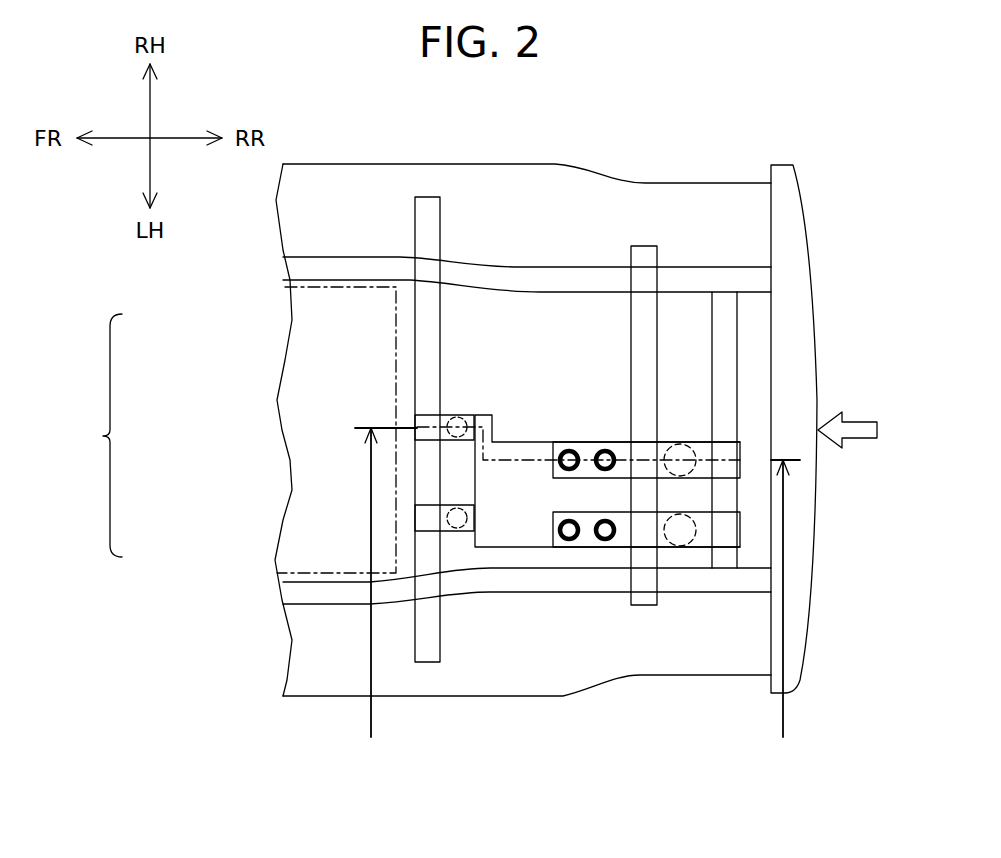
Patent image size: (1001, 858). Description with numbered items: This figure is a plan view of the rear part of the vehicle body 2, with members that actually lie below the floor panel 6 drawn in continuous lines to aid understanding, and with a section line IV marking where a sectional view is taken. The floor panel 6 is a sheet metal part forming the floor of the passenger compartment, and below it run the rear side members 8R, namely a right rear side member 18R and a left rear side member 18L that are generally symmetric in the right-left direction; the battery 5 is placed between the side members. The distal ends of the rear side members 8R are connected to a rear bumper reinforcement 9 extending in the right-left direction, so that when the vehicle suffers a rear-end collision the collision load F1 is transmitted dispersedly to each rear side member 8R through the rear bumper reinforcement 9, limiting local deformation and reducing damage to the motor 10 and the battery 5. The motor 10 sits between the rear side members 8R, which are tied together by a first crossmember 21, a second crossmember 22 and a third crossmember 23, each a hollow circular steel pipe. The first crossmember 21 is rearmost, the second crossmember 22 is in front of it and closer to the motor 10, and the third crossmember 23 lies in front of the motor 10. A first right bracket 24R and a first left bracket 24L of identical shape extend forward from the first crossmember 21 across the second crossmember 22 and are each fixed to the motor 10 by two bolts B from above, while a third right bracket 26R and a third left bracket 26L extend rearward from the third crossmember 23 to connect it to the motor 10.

The vehicle body 2 is at (318, 118).
The battery 5 is at (346, 565).
The floor panel 6 is at (591, 198).
The rear side members 8R is at (93, 435).
The rear bumper reinforcement 9 is at (793, 222).
The motor 10 is at (523, 528).
The right rear side member 18R is at (300, 271).
The left rear side member 18L is at (292, 595).
The first crossmember 21 is at (740, 550).
The second crossmember 22 is at (648, 605).
The third crossmember 23 is at (428, 645).
The first right bracket 24R is at (667, 442).
The first left bracket 24L is at (697, 550).
The third right bracket 26R is at (465, 415).
The third left bracket 26L is at (424, 518).
The bolts B is at (570, 442).
The collision load F1 is at (857, 442).
The section line IV- IV is at (577, 607).